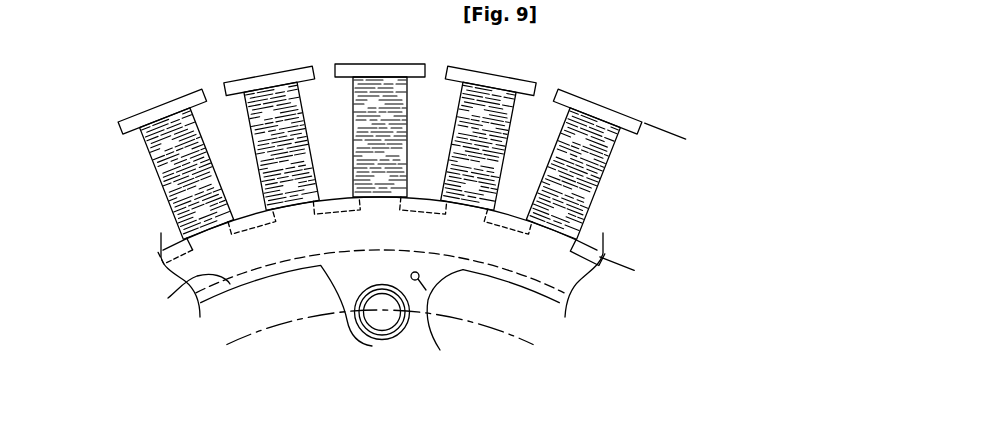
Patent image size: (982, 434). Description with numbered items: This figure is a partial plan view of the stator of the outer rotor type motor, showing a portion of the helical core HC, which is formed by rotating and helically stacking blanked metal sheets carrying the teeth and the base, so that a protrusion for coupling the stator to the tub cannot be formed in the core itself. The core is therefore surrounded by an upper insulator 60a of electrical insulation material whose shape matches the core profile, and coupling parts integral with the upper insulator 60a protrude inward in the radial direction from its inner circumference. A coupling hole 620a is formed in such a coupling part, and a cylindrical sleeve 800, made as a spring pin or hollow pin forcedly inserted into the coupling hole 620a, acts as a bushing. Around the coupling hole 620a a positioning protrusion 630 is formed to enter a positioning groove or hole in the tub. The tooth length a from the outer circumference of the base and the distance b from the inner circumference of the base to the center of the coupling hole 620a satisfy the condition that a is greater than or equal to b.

The helical core HC is at (168, 298).
The upper insulator 60a is at (233, 288).
The cylindrical sleeve 800 is at (366, 336).
The coupling hole 620a is at (382, 318).
The positioning protrusion 630 is at (440, 350).
The length of teeth a is at (678, 131).
The distance to coupling hole centers b is at (525, 246).